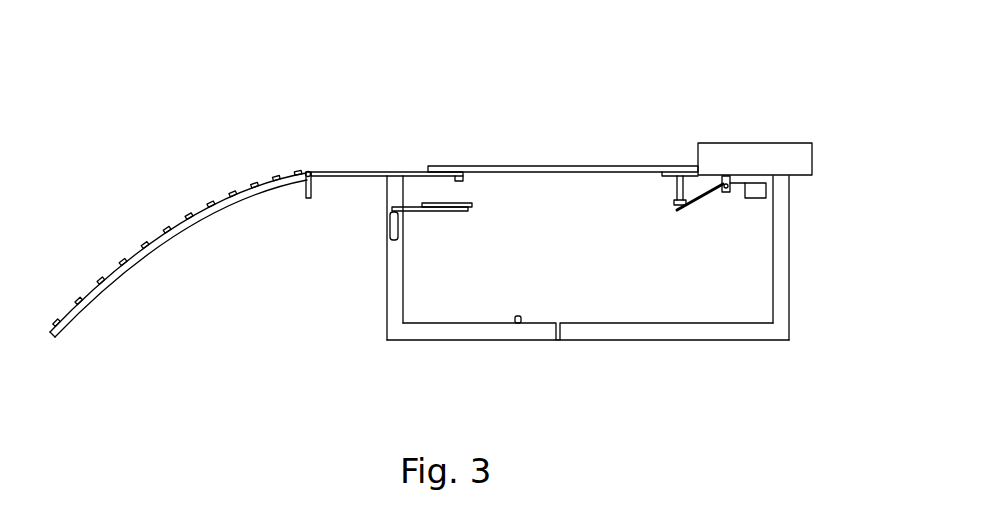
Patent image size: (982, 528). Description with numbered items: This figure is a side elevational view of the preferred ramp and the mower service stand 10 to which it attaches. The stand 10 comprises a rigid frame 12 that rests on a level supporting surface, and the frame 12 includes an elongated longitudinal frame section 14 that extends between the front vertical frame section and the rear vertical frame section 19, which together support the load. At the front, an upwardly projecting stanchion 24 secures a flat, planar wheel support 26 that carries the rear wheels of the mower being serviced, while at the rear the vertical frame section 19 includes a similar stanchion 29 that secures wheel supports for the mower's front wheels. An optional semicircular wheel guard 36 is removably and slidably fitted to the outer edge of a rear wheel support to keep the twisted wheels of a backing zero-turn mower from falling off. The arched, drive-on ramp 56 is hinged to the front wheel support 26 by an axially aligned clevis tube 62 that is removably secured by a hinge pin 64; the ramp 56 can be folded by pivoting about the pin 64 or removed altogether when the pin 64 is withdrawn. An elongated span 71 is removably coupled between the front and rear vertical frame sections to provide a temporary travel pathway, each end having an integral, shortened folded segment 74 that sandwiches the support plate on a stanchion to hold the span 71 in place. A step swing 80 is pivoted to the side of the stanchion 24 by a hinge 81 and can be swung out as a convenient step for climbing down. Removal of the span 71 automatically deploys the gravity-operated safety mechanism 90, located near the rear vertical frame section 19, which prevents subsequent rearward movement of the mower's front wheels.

The stand 10 is at (354, 96).
The rigid frame 12 is at (409, 272).
The longitudinal frame section 14 is at (641, 311).
The vertical frame section 19 is at (799, 240).
The stanchion 24 is at (393, 296).
The wheel support 26 is at (388, 172).
The stanchion 29 is at (780, 281).
The wheel guard 36 is at (777, 155).
The arched ramp 56 is at (170, 213).
The clevis tube 62 is at (309, 171).
The hinge pin 64 is at (313, 189).
The span 71 is at (600, 165).
The folded segment 74 is at (470, 180).
The step swing 80 is at (450, 213).
The hinge 81 is at (393, 238).
The safety mechanism 90 is at (727, 206).